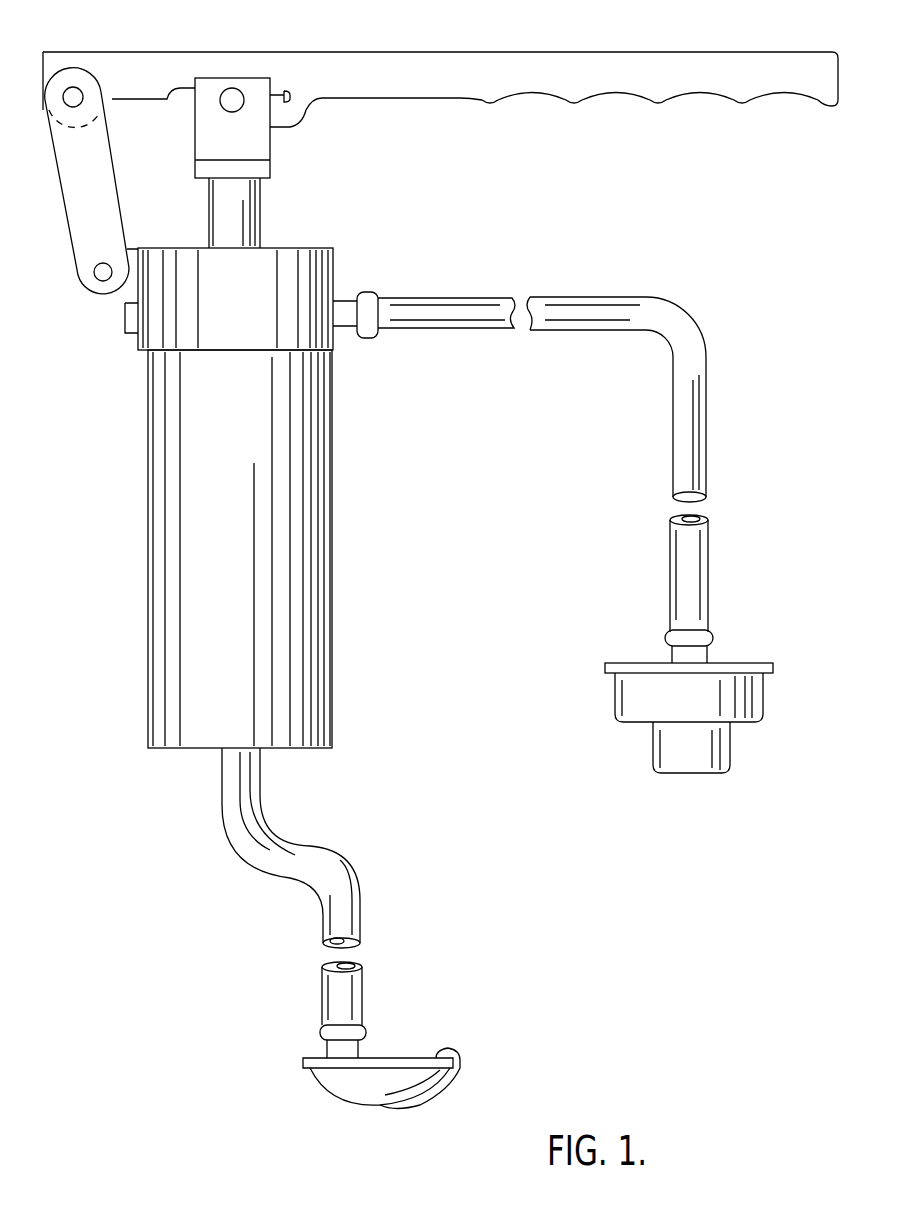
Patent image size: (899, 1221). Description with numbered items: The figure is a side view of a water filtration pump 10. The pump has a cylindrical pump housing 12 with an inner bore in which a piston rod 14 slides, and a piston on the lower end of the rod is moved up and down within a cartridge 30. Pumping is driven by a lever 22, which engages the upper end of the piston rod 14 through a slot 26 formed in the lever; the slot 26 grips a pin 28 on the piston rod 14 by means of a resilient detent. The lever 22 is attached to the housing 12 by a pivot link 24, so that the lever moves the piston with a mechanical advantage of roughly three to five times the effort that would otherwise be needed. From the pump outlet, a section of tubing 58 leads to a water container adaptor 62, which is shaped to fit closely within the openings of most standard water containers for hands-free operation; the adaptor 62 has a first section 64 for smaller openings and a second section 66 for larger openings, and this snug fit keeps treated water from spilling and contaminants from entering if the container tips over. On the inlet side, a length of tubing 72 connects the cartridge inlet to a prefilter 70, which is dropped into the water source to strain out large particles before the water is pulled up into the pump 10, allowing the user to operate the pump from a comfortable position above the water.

The water filtration pump 10 is at (124, 552).
The pump housing 12 is at (334, 272).
The piston rod 14 is at (262, 215).
The lever 22 is at (486, 56).
The pivot link 24 is at (66, 216).
The slot 26 is at (292, 122).
The pin 28 is at (195, 132).
The cartridge 30 is at (318, 597).
The tubing 58 is at (674, 300).
The container adaptor 62 is at (766, 706).
The first section 64 is at (655, 746).
The second section 66 is at (606, 690).
The prefilter 70 is at (316, 1072).
The tubing 72 is at (313, 882).